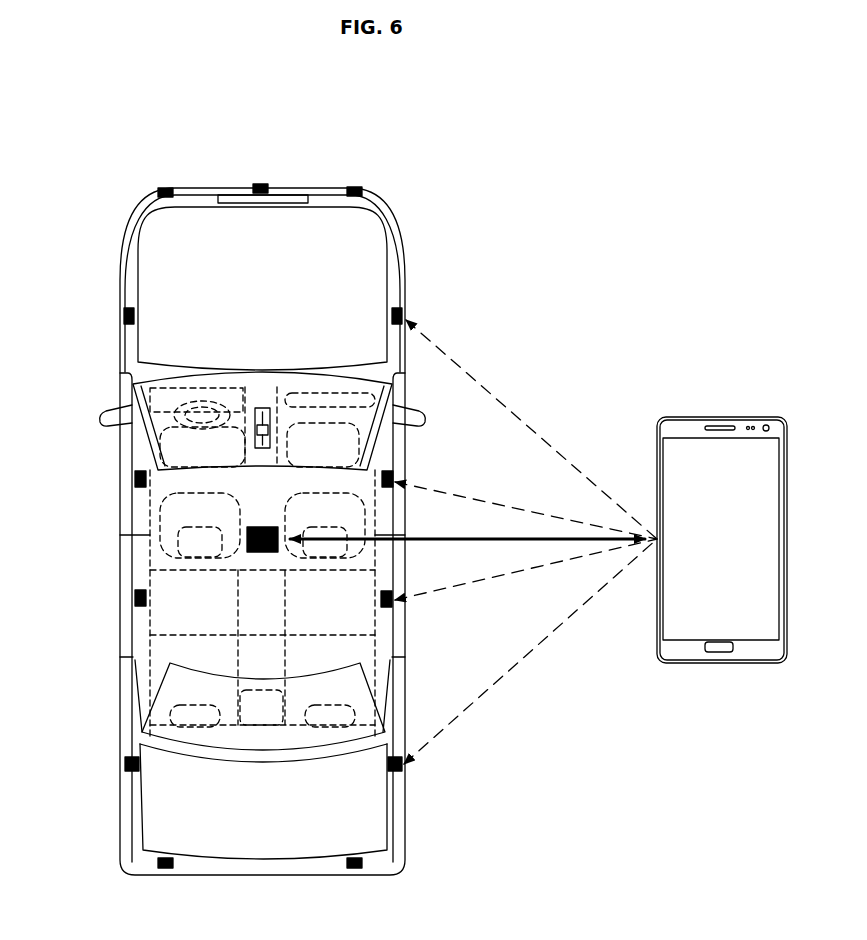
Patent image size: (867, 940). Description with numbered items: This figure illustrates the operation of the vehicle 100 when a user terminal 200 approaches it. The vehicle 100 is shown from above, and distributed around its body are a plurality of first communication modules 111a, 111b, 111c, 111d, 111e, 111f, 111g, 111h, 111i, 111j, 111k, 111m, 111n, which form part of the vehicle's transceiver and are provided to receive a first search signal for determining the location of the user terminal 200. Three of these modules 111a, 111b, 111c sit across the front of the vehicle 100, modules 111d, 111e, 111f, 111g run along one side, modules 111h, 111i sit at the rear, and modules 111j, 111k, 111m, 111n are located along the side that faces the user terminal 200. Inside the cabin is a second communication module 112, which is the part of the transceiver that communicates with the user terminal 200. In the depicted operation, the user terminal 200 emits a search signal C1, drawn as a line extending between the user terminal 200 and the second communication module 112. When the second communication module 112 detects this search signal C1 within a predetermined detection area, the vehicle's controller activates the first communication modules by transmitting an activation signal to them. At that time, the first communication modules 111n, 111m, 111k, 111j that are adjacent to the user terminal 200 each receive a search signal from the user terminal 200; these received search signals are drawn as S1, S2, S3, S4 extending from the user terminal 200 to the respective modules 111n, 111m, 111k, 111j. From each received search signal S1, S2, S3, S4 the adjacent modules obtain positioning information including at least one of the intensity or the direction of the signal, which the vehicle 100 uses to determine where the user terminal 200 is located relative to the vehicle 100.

The vehicle 100 is at (197, 188).
The first communication module 111a is at (163, 189).
The first communication module 111b is at (260, 186).
The first communication module 111c is at (352, 187).
The first communication module 111d is at (124, 315).
The first communication module 111e is at (135, 480).
The first communication module 111f is at (135, 598).
The first communication module 111g is at (126, 765).
The first communication module 111h is at (166, 870).
The first communication module 111i is at (354, 870).
The first communication module 111j is at (402, 768).
The first communication module 111k is at (392, 600).
The first communication module 111m is at (393, 479).
The first communication module 111n is at (402, 315).
The second communication module 112 is at (260, 527).
The user terminal 200 is at (718, 417).
The search signal C1 is at (432, 539).
The received search signal S1 is at (525, 423).
The received search signal S2 is at (513, 507).
The received search signal S3 is at (512, 573).
The received search signal S4 is at (538, 648).